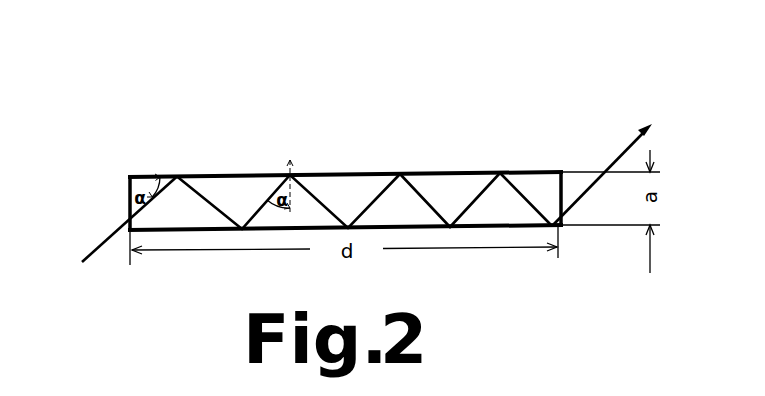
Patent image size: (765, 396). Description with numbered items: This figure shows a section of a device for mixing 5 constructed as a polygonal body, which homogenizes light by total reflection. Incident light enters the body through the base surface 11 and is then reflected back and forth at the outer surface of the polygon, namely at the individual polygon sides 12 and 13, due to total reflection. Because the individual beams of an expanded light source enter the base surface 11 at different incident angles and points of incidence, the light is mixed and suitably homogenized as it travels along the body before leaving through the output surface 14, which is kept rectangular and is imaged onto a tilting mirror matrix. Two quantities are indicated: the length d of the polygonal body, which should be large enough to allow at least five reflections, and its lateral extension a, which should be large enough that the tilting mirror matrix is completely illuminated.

The device for mixing 5 is at (347, 183).
The base surface 11 is at (128, 202).
The polygon side 12 is at (208, 177).
The polygon side 13 is at (168, 233).
The output surface 14 is at (562, 185).